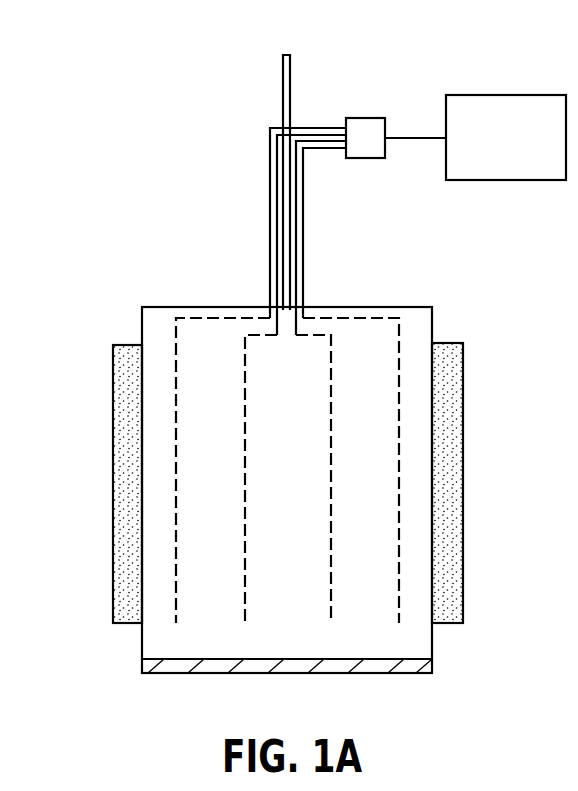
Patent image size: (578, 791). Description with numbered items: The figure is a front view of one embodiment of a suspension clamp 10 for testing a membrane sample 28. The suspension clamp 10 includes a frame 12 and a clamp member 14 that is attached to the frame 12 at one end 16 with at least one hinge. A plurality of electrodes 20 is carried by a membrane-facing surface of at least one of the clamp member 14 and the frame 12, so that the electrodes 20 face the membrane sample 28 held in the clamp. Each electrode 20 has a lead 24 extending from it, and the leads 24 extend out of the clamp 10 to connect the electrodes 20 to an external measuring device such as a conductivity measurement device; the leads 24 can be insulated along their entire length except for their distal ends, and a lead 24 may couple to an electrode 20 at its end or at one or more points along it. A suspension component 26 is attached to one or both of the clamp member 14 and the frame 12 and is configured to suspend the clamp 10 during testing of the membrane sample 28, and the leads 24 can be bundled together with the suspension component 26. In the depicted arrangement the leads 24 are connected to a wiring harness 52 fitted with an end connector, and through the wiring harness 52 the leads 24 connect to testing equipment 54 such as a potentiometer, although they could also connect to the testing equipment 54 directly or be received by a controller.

The suspension clamp 10 is at (147, 182).
The frame 12 is at (390, 673).
The clamp member 14 is at (415, 555).
The end 16 is at (417, 333).
The electrodes 20 is at (331, 573).
The leads 24 is at (277, 213).
The suspension component 26 is at (291, 83).
The membrane sample 28 is at (132, 513).
The wiring harness 52 is at (365, 143).
The testing equipment 54 is at (520, 147).